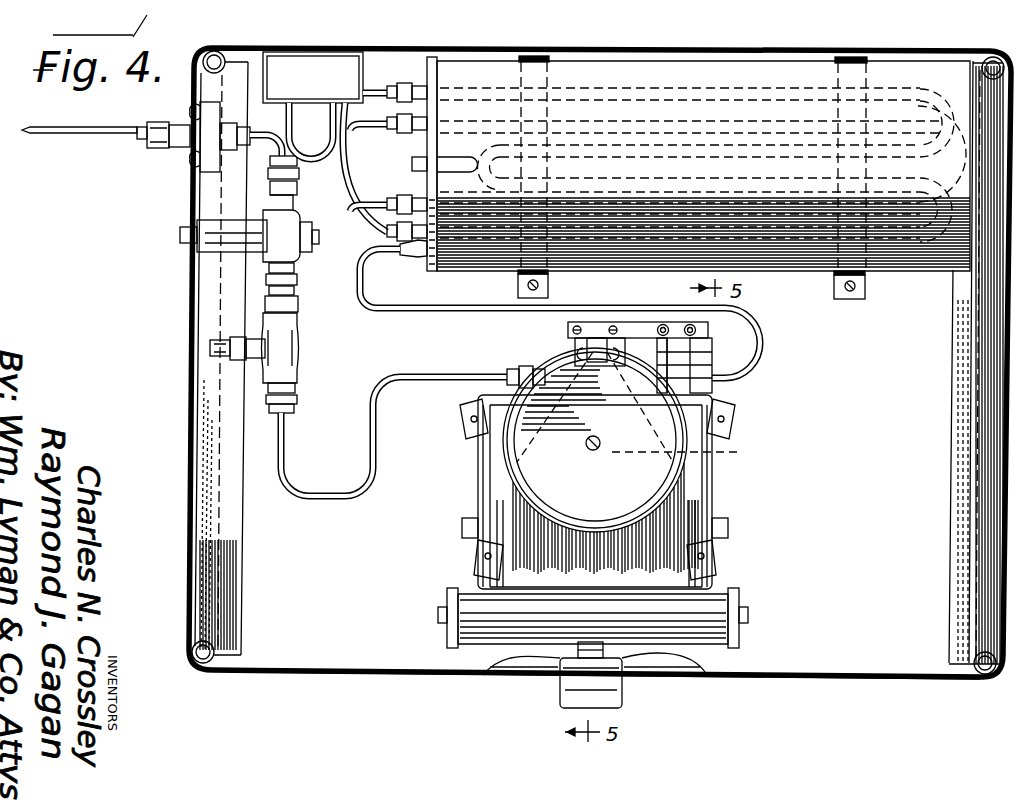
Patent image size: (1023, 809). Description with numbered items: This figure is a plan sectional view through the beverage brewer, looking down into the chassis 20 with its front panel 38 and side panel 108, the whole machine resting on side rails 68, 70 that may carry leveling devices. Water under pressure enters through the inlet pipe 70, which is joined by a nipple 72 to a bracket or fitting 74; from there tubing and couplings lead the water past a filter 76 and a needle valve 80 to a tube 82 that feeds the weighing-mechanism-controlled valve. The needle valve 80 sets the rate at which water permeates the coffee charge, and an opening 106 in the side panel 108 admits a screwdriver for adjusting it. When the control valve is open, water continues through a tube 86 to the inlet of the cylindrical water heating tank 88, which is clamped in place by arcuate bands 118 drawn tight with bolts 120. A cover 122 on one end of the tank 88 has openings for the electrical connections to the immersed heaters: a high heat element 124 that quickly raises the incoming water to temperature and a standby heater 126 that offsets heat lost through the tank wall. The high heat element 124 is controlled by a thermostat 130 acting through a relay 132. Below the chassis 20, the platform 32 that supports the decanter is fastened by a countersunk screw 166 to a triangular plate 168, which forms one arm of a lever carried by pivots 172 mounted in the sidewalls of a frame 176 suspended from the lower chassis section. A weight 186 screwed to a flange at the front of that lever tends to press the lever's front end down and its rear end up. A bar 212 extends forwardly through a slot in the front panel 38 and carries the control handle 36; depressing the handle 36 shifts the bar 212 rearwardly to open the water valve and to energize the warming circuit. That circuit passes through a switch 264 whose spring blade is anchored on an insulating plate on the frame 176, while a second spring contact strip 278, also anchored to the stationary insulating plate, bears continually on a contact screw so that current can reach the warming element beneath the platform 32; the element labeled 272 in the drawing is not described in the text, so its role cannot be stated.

The chassis 20 is at (185, 440).
The platform 32 is at (604, 501).
The control handle 36 is at (560, 706).
The front panel 38 is at (307, 678).
The side rail 68 is at (218, 573).
The pipe 70 is at (62, 138).
The nipple 72 is at (150, 148).
The fitting 74 is at (213, 168).
The filter 76 is at (180, 237).
The needle valve 80 is at (263, 363).
The tube 82 is at (430, 373).
The tube 86 is at (446, 310).
The water heating tank 88 is at (915, 272).
The opening 106 is at (190, 348).
The side panel 108 is at (153, 275).
The arcuate band 118 is at (536, 56).
The bolt 120 is at (518, 286).
The cover 122 is at (430, 66).
The high heat element 124 is at (582, 120).
The standby heater 126 is at (655, 120).
The thermostat 130 is at (412, 165).
The relay 132 is at (337, 91).
The countersunk screw 166 is at (588, 440).
The triangular plate 168 is at (647, 410).
The pivot 172 is at (462, 527).
The frame 176 is at (470, 487).
The weight 186 is at (742, 637).
The bar 212 is at (650, 675).
The switch 264 is at (720, 342).
The plate 272 is at (568, 344).
The spring contact strip 278 is at (661, 320).